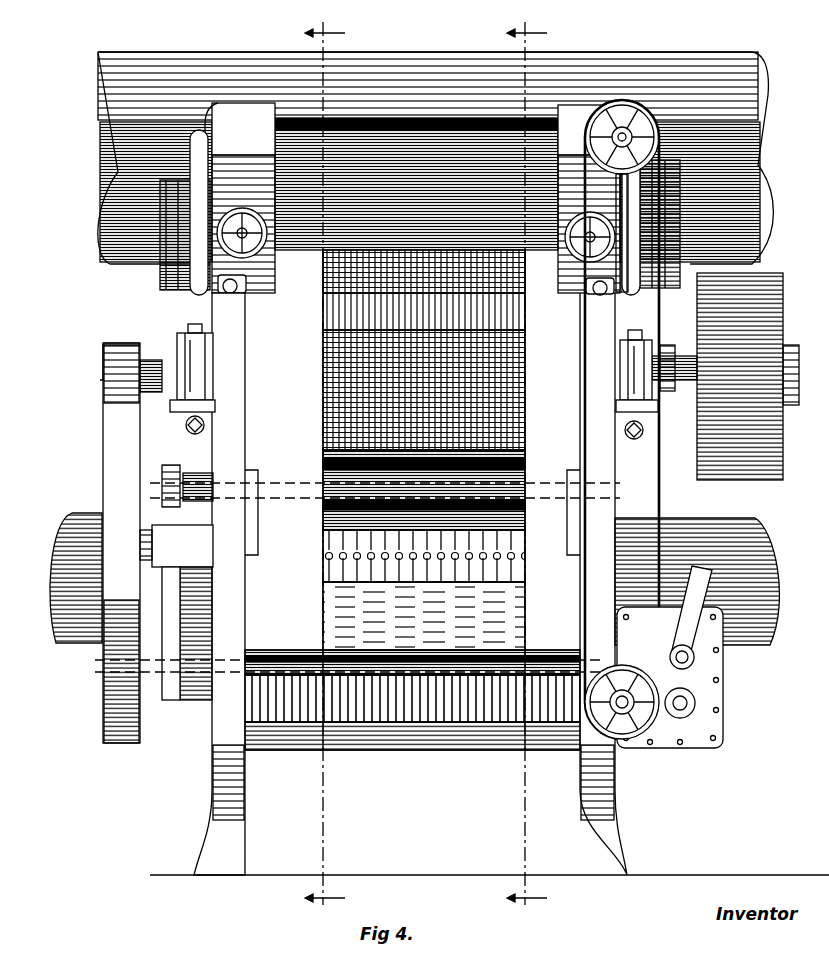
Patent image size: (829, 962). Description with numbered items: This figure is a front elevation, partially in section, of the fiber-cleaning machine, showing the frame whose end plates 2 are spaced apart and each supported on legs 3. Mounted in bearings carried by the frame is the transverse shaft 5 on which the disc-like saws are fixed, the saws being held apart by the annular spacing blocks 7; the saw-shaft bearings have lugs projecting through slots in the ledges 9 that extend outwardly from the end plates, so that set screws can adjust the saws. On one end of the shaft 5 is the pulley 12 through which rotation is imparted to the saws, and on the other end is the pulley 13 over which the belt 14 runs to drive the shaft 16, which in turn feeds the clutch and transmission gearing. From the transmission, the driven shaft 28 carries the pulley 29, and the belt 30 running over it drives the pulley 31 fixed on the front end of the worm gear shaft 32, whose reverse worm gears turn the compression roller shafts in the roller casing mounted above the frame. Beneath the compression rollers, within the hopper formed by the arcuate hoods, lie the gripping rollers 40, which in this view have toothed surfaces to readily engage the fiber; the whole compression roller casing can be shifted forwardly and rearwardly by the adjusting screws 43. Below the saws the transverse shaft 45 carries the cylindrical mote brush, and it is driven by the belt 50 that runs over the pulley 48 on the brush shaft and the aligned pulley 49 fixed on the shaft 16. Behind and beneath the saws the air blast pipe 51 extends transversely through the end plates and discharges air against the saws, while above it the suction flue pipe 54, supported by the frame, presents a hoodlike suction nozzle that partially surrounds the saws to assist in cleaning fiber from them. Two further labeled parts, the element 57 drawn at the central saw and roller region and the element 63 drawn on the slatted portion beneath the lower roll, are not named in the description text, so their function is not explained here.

The end plates 2 is at (235, 455).
The legs 3 is at (594, 832).
The transverse shaft 5 is at (679, 356).
The annular spacing blocks 7 is at (522, 372).
The ledges 9 is at (178, 410).
The pulley 12 is at (736, 480).
The pulley 13 is at (140, 403).
The belt 14 is at (106, 459).
The shaft 16 is at (140, 688).
The driven shaft 28 is at (626, 714).
The pulley 29 is at (612, 684).
The belt 30 is at (660, 502).
The pulley 31 is at (622, 178).
The worm gear shaft 32 is at (588, 128).
The gripping rollers 40 is at (586, 274).
The adjusting screws 43 is at (212, 291).
The transverse shaft 45 is at (206, 486).
The pulley 48 is at (166, 502).
The pulley 49 is at (206, 616).
The belt 50 is at (172, 576).
The air blast pipe 51 is at (757, 538).
The suction flue pipe 54 is at (722, 60).
The roll 57 is at (522, 358).
The slats 63 is at (383, 708).